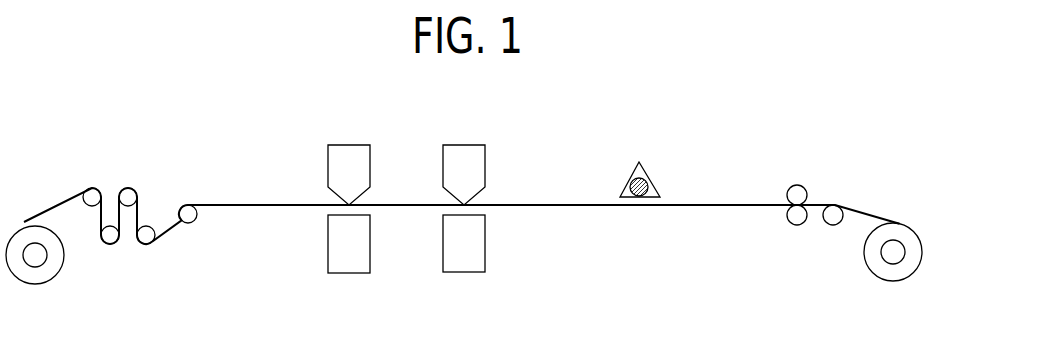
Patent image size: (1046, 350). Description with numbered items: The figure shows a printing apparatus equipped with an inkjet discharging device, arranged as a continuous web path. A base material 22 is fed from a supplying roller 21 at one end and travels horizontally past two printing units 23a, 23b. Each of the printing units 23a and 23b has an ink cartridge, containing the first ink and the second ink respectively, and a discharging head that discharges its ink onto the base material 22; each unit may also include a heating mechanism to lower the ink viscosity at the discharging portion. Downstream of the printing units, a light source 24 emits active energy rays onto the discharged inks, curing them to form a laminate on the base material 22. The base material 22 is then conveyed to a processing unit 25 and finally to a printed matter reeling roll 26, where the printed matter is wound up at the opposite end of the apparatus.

The supplying roller 21 is at (33, 258).
The base material 22 is at (238, 202).
The printing unit 23a is at (350, 152).
The printing unit 23b is at (463, 152).
The light source 24 is at (647, 172).
The processing unit 25 is at (798, 180).
The printed matter reeling roll 26 is at (888, 257).